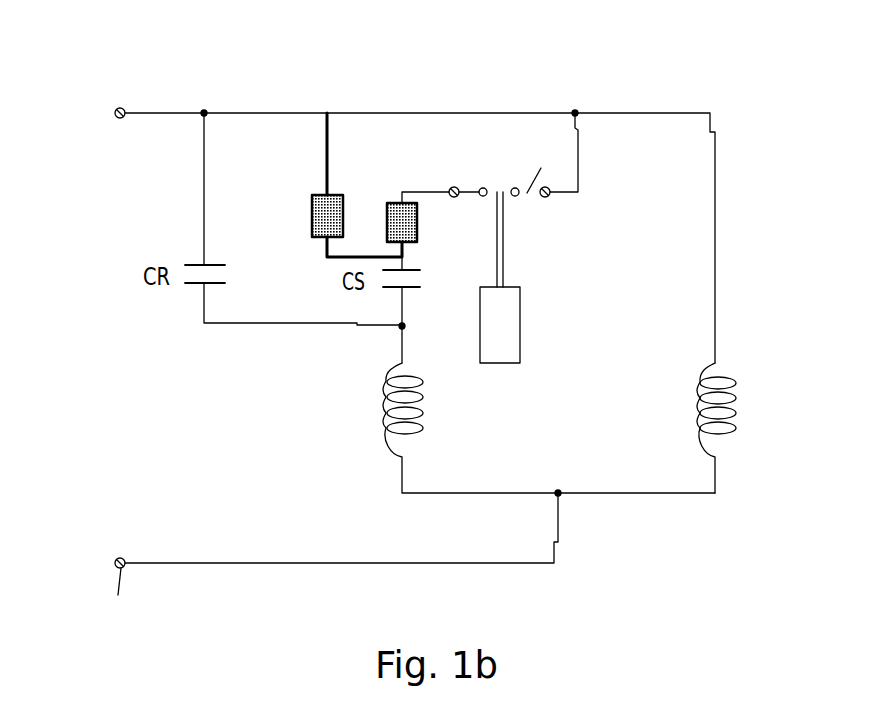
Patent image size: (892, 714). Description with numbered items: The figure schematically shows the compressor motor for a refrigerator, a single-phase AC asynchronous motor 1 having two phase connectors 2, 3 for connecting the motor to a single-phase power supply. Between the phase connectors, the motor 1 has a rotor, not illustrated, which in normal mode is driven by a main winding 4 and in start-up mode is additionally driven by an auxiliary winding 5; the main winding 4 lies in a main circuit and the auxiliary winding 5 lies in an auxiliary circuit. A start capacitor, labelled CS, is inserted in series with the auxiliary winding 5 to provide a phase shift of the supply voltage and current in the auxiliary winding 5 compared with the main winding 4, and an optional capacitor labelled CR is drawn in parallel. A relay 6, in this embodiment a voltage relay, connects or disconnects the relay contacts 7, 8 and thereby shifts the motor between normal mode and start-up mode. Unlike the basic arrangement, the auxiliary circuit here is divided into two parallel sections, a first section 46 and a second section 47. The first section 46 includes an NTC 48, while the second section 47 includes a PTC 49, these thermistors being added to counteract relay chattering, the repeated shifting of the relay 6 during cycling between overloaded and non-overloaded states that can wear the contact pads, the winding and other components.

The single-phase AC asynchronous motor 1 is at (255, 38).
The phase connector 2 is at (117, 108).
The phase connector 3 is at (338, 567).
The main winding 4 is at (735, 410).
The auxiliary winding 5 is at (397, 398).
The relay 6 is at (523, 302).
The relay contact 7 is at (544, 153).
The relay contact 8 is at (475, 188).
The first section 46 is at (433, 199).
The second section 47 is at (326, 172).
The NTC 48 is at (401, 201).
The PTC 49 is at (311, 217).